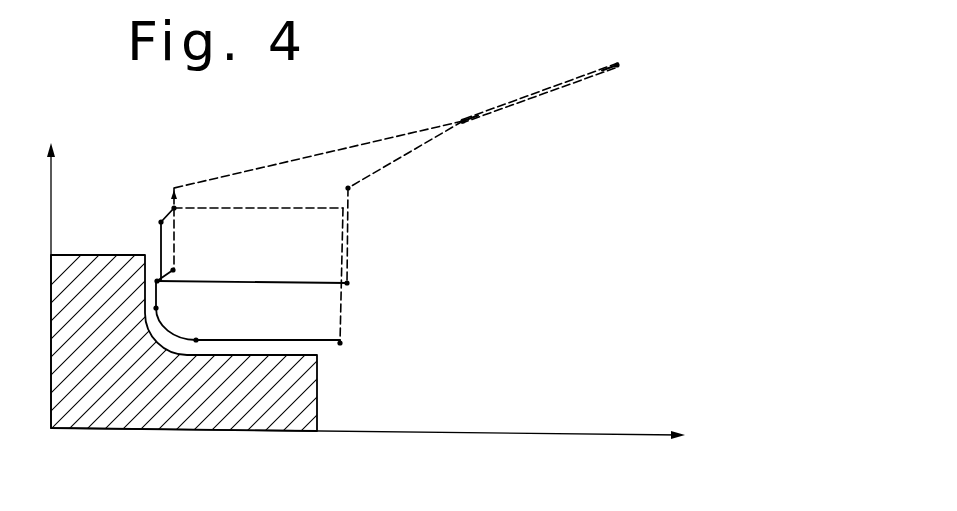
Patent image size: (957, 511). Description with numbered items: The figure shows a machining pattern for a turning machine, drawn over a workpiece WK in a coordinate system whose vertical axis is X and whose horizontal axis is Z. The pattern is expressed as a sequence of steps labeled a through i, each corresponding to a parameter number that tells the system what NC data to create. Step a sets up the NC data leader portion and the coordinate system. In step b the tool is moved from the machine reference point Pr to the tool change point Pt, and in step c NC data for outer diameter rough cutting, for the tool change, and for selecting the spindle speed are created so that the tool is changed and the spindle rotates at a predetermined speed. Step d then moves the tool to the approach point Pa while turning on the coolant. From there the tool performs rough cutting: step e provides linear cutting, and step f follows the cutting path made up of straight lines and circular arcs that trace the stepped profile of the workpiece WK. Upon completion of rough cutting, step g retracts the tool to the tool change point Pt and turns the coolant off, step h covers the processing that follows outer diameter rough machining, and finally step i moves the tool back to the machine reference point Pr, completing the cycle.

The workpiece WK is at (103, 253).
The X axis X is at (59, 277).
The Z axis Z is at (368, 448).
The machine reference point Pr is at (649, 53).
The tool change point Pt is at (472, 100).
The approach point Pa is at (397, 196).
The NC data leader and coordinate system setting step a is at (619, 80).
The tool movement from machine reference point to tool change point b is at (538, 95).
The outer diameter rough cutting, tool change and spindle speed selection step c is at (468, 132).
The tool movement to approach point d is at (405, 154).
The linear cutting e is at (362, 237).
The rough cutting path of straight lines and circular arcs f is at (247, 313).
The tool retraction to tool change point g is at (318, 154).
The processing following outer diameter rough machining h is at (310, 155).
The tool movement to machine reference point i is at (541, 91).